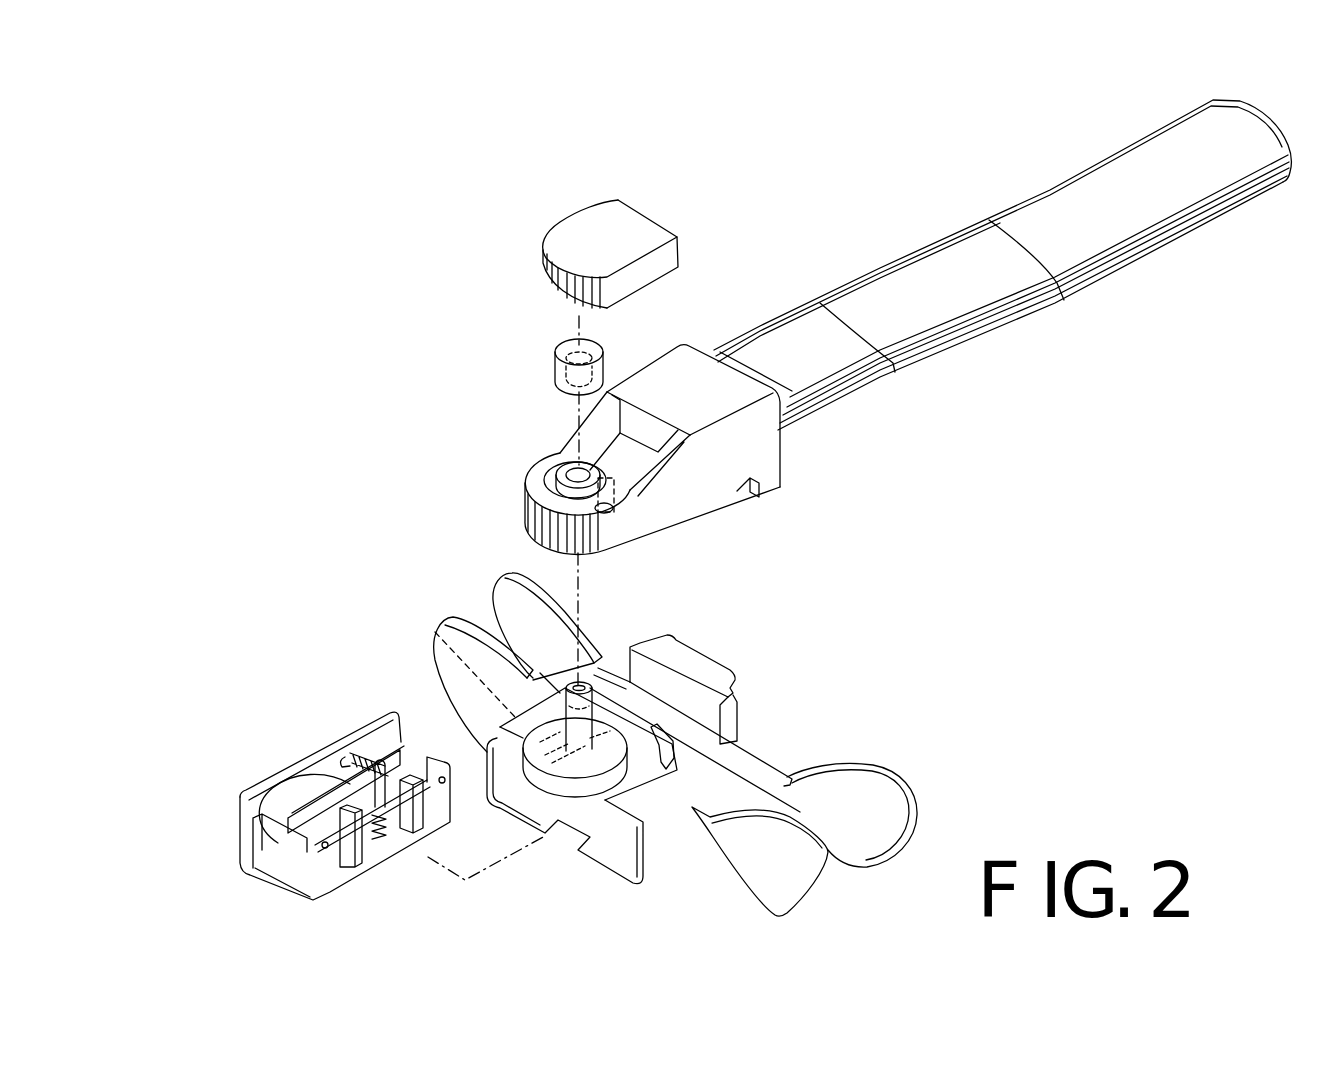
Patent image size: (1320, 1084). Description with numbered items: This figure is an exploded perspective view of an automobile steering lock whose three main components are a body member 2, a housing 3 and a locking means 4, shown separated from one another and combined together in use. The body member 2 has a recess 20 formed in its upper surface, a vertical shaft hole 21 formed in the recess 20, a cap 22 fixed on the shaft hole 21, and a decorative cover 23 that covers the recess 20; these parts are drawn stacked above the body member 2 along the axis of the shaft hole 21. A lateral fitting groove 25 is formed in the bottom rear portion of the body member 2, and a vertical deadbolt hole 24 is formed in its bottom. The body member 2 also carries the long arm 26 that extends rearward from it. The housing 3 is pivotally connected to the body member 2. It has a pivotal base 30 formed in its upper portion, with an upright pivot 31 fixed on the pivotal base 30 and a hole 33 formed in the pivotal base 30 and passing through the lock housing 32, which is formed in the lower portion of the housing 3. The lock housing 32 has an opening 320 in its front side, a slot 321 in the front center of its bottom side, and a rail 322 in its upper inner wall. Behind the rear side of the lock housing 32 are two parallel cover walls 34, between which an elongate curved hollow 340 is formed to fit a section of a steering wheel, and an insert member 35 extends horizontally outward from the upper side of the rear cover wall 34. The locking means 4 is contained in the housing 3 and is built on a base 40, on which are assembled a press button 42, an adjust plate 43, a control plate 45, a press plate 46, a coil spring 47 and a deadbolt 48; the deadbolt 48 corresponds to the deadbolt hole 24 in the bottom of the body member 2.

The body member 2 is at (875, 336).
The recess 20 is at (640, 465).
The shaft hole 21 is at (553, 463).
The cap 22 is at (555, 358).
The decorative cover 23 is at (660, 223).
The deadbolt hole 24 is at (610, 513).
The fitting groove 25 is at (760, 482).
The handle arm 26 is at (889, 267).
The housing 3 is at (631, 756).
The pivotal base 30 is at (603, 738).
The pivot 31 is at (486, 746).
The lock housing 32 is at (660, 853).
The hole 33 is at (637, 760).
The cover walls 34 is at (790, 873).
The insert member 35 is at (697, 660).
The opening 320 is at (497, 740).
The slot 321 is at (567, 833).
The rail 322 is at (430, 637).
The curved hollow 340 is at (720, 772).
The locking means 4 is at (354, 800).
The base 40 is at (260, 843).
The press button 42 is at (350, 750).
The adjust plate 43 is at (297, 807).
The control plate 45 is at (260, 858).
The press plate 46 is at (393, 793).
The coil spring 47 is at (377, 853).
The deadbolt 48 is at (365, 760).